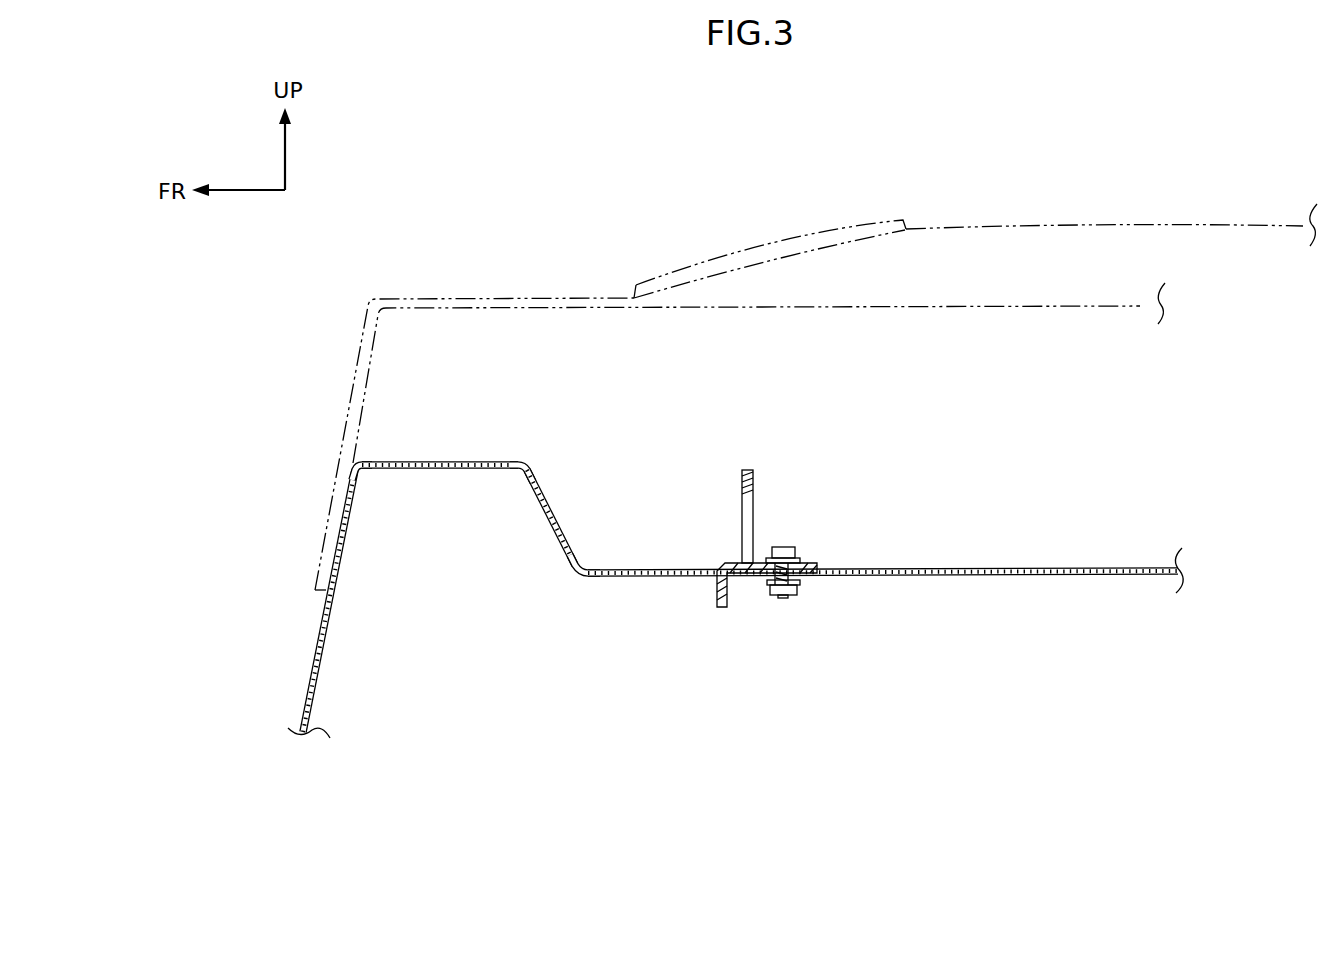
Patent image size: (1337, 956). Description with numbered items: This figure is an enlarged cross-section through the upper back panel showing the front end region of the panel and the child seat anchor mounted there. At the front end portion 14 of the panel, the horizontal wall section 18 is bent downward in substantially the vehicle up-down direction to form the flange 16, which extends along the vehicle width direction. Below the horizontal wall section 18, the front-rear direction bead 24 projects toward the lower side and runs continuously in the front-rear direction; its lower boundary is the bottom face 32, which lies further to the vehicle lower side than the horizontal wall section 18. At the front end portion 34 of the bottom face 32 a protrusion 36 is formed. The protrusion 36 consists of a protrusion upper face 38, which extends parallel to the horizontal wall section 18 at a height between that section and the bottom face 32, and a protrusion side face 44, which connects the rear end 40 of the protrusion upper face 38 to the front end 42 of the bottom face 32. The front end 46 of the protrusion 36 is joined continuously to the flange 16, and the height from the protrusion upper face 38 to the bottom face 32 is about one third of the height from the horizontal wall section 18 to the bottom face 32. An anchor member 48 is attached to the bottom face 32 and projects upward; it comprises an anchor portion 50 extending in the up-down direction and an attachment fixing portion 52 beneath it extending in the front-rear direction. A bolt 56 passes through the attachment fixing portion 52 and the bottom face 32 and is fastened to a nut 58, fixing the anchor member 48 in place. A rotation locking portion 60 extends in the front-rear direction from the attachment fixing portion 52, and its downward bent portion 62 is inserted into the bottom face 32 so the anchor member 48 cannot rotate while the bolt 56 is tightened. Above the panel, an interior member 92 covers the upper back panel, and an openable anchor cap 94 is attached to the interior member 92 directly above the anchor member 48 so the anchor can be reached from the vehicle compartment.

The front end portion 14 is at (402, 296).
The flange 16 is at (315, 643).
The horizontal wall section 18 is at (862, 305).
The front-rear direction bead 24 is at (891, 416).
The bottom face 32 is at (955, 569).
The front end portion 34 is at (516, 408).
The protrusion 36 is at (387, 457).
The protrusion upper face 38 is at (440, 465).
The rear end 40 is at (525, 465).
The front end 42 is at (590, 572).
The protrusion side face 44 is at (556, 517).
The front end 46 is at (352, 462).
The anchor member 48 is at (786, 486).
The anchor portion 50 is at (747, 470).
The attachment fixing portion 52 is at (810, 562).
The bolt 56 is at (790, 548).
The nut 58 is at (795, 586).
The rotation locking portion 60 is at (718, 565).
The bent portion 62 is at (720, 603).
The interior member 92 is at (1048, 225).
The anchor cap 94 is at (720, 255).